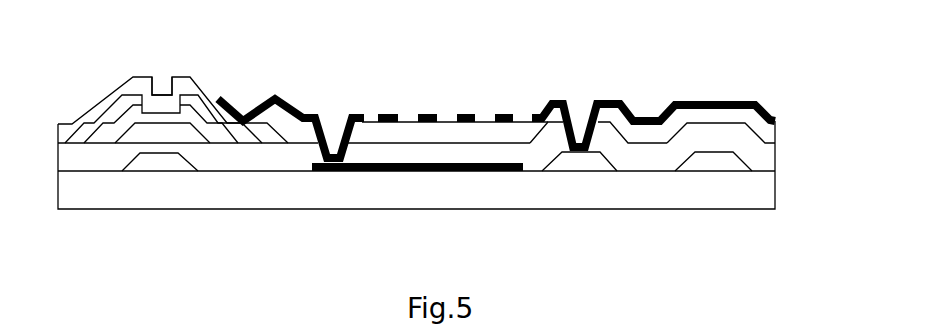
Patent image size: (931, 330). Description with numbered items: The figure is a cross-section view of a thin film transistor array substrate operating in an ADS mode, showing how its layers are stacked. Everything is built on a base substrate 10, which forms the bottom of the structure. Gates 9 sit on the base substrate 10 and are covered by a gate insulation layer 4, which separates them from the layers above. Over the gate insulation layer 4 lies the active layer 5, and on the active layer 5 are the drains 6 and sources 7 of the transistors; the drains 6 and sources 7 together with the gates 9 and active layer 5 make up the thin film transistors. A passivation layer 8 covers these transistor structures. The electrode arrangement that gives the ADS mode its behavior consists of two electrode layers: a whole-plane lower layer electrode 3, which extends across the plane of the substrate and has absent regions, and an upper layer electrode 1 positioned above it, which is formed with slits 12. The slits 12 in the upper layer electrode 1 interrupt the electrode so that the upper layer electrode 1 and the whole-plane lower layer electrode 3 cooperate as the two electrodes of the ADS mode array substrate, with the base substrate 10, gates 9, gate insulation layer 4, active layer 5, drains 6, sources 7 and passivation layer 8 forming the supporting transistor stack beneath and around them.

The upper layer electrode 1 is at (463, 115).
The whole-plane lower layer electrode 3 is at (468, 171).
The gate insulation layer 4 is at (760, 123).
The active layer 5 is at (123, 122).
The drains 6 is at (125, 105).
The sources 7 is at (200, 103).
The passivation layer 8 is at (182, 77).
The gates 9 is at (172, 165).
The base substrate 10 is at (775, 198).
The slits 12 is at (447, 113).